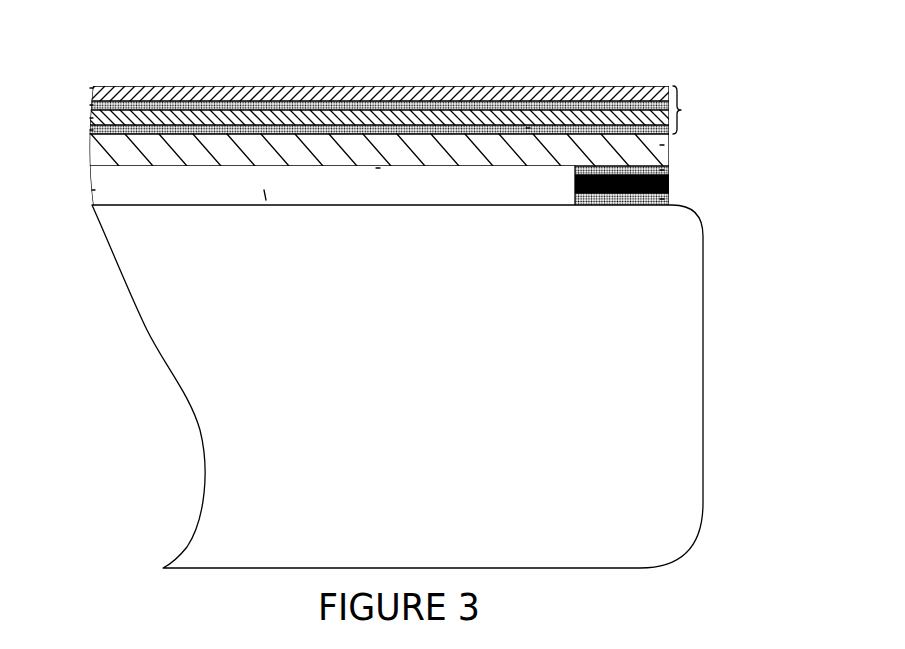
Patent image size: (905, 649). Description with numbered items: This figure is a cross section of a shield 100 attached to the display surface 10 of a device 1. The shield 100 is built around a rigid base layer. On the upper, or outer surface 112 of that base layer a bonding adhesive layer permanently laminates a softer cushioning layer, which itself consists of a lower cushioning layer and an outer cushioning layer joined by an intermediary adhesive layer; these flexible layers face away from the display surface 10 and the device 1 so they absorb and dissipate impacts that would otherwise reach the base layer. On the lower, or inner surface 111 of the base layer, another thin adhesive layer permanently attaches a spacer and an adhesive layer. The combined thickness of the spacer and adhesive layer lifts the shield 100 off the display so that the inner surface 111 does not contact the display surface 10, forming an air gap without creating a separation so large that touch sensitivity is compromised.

The device 1 is at (695, 361).
The display surface 10 is at (267, 205).
The shield 100 is at (377, 109).
The inner surface 111 is at (379, 166).
The outer surface 112 is at (531, 132).